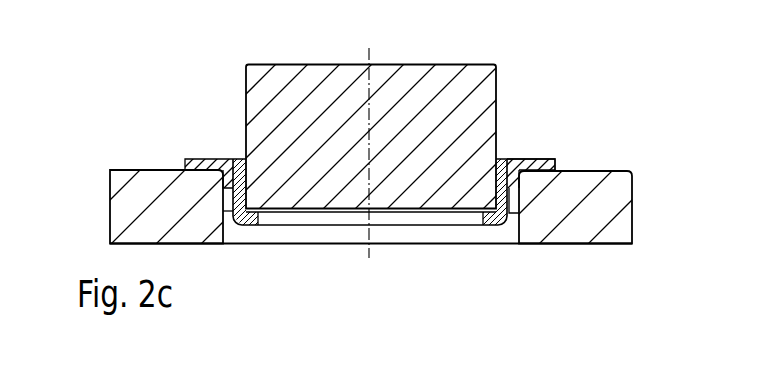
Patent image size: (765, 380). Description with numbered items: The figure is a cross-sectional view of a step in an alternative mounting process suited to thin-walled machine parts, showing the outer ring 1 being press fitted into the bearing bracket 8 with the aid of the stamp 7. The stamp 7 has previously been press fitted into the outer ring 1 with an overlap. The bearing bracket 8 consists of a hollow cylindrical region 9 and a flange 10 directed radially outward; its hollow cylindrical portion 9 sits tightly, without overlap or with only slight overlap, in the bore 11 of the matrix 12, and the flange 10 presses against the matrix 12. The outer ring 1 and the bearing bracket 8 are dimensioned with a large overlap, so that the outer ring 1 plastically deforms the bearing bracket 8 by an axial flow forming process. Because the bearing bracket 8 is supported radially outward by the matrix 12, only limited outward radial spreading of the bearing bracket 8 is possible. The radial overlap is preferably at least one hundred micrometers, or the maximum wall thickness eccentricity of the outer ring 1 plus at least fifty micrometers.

The outer ring 1 is at (499, 172).
The stamp 7 is at (451, 105).
The bearing bracket 8 is at (517, 165).
The hollow cylindrical region 9 is at (520, 211).
The flange 10 is at (538, 161).
The bore 11 is at (448, 237).
The matrix 12 is at (564, 197).